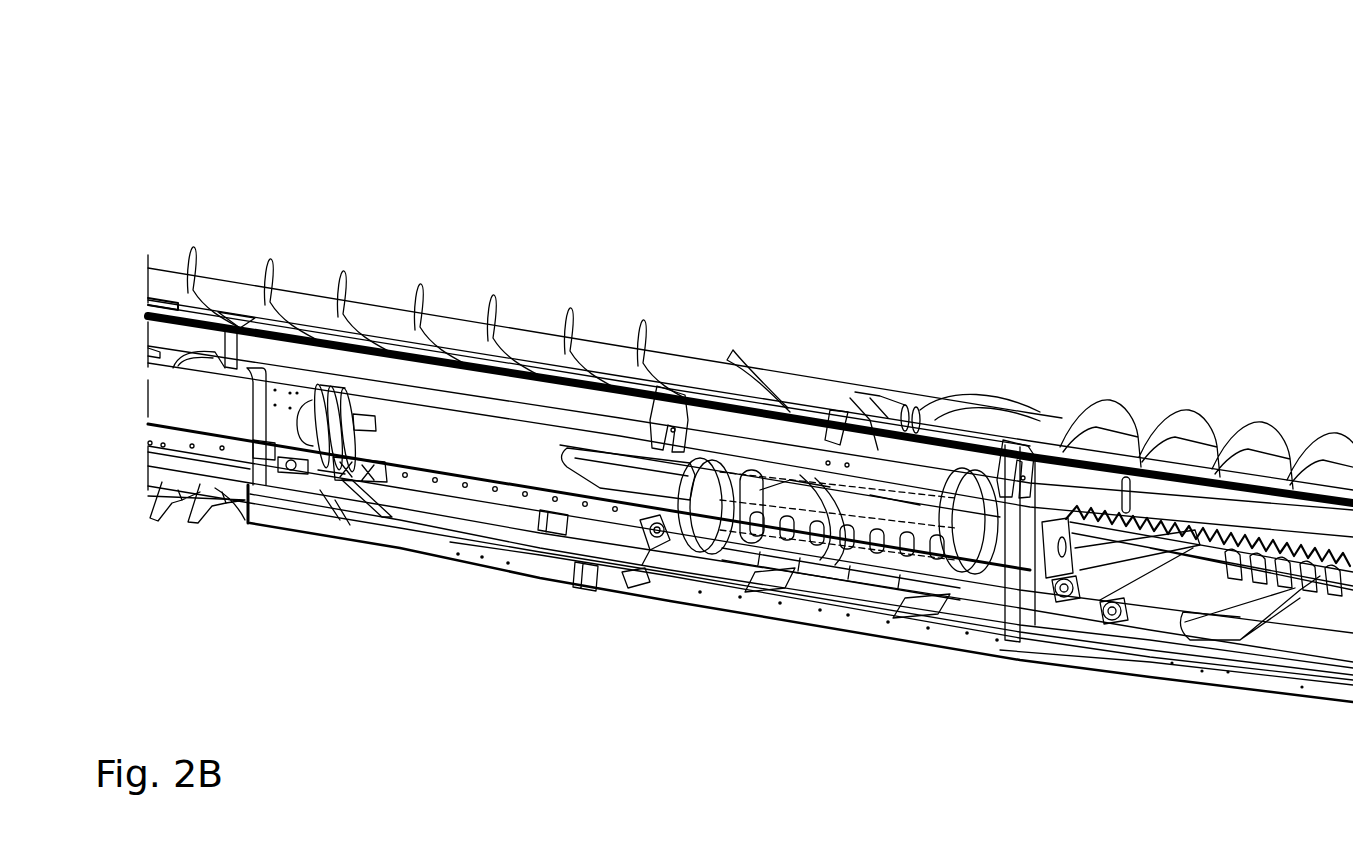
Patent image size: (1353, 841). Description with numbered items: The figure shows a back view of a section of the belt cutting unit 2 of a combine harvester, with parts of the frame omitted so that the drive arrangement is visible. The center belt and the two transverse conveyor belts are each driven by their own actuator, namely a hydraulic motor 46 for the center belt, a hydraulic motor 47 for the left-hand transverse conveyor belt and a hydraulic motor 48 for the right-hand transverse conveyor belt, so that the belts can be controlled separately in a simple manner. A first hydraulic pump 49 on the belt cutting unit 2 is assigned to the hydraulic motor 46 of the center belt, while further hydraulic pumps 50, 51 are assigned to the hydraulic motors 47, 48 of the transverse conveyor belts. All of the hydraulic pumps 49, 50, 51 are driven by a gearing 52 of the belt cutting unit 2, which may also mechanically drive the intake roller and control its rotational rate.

The belt cutting unit 2 is at (214, 150).
The hydraulic motor 46 is at (1116, 622).
The hydraulic motor 47 is at (653, 545).
The hydraulic motor 48 is at (1060, 598).
The first hydraulic pump 49 is at (378, 522).
The hydraulic pump 50 is at (337, 522).
The hydraulic pump 51 is at (273, 520).
The gearing 52 is at (353, 380).